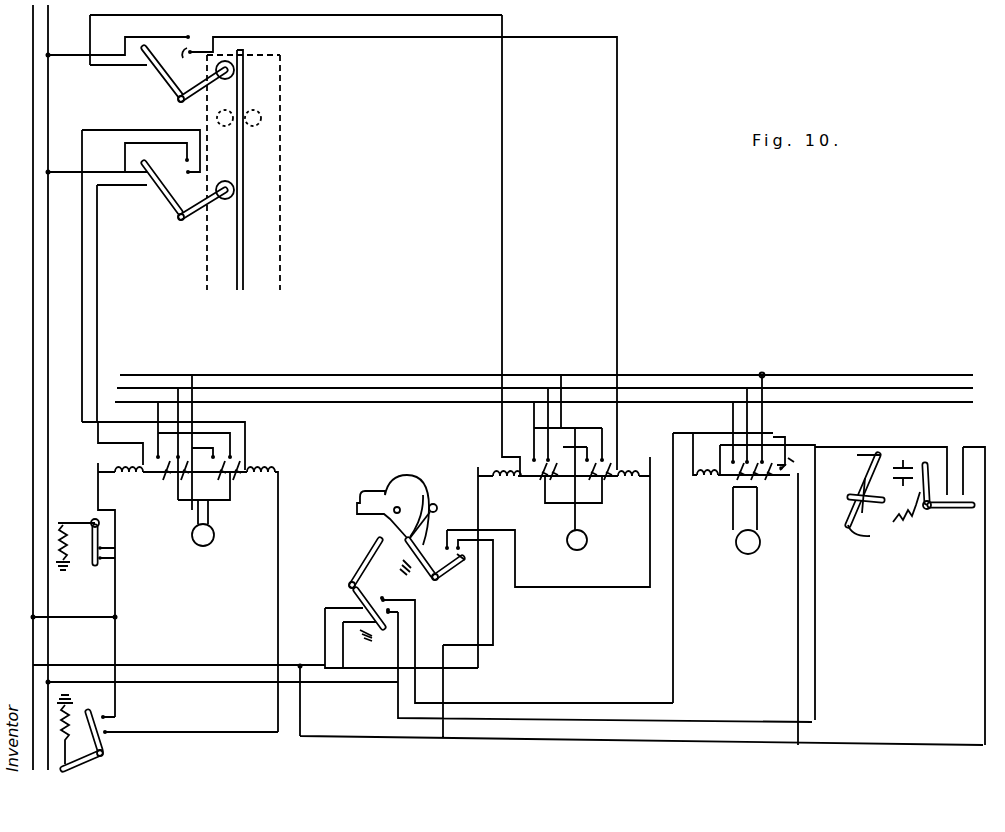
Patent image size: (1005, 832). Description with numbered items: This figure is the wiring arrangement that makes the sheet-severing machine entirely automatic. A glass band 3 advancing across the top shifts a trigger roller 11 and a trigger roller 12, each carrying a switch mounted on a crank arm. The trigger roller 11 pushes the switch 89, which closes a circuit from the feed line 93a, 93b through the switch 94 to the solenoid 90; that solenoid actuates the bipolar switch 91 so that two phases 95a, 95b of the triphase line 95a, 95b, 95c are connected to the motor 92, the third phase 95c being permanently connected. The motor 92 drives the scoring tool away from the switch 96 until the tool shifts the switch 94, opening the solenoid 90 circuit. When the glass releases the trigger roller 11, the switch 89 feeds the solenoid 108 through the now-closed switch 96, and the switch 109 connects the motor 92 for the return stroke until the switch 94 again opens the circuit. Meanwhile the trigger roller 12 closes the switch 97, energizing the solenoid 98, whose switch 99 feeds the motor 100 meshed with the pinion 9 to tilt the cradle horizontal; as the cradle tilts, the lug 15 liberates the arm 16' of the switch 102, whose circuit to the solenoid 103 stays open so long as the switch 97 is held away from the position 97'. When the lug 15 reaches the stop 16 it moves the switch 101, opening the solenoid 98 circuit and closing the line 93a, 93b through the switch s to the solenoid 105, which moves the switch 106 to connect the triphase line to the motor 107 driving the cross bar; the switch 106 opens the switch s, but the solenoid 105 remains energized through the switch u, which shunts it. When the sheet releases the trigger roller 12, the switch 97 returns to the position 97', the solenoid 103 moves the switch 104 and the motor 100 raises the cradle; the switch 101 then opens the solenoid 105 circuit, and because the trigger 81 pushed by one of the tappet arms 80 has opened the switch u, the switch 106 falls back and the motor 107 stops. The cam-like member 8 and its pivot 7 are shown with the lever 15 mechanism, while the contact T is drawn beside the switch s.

The switch 97 is at (181, 76).
The switch position 97' is at (186, 64).
The trigger roller 12 is at (234, 70).
The glass band 3 is at (245, 165).
The trigger roller 11 is at (234, 190).
The switch 89 is at (147, 192).
The feed line 93a is at (33, 385).
The feed line 93b is at (48, 424).
The phase of triphase line 95a is at (435, 402).
The phase of triphase line 95b is at (378, 388).
The phase of triphase line 95c is at (330, 358).
The solenoid 108 is at (275, 466).
The switch 94 is at (76, 517).
The bipolar switch 91 is at (163, 481).
The solenoid 90 is at (128, 479).
The switch 109 is at (233, 487).
The motor 92 is at (203, 546).
The cam 8 is at (360, 498).
The pivot 7 is at (405, 501).
The lug 15 is at (420, 495).
The pinion 9 is at (438, 504).
The arm of switch 102 16' is at (439, 516).
The stop 16 is at (364, 576).
The switch 101 is at (368, 588).
The switch 102 is at (457, 570).
The solenoid 98 is at (501, 490).
The switch 99 is at (543, 490).
The motor 100 is at (588, 546).
The solenoid 103 is at (627, 469).
The switch 104 is at (601, 486).
The solenoid 105 is at (703, 490).
The switch 106 is at (768, 486).
The motor 107 is at (740, 556).
The contact T is at (782, 440).
The switch s is at (798, 456).
The tappet arms 80 is at (870, 456).
The trigger 81 is at (910, 466).
The switch u is at (955, 510).
The switch 96 is at (110, 745).